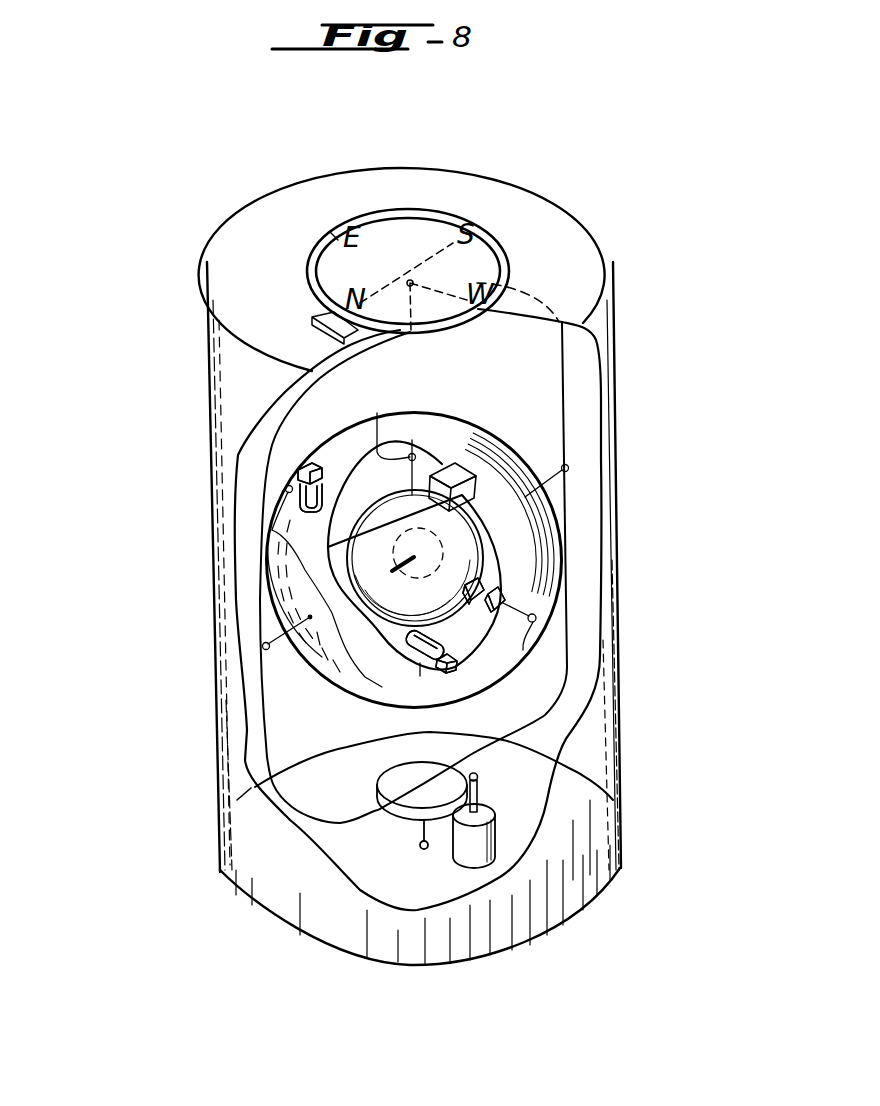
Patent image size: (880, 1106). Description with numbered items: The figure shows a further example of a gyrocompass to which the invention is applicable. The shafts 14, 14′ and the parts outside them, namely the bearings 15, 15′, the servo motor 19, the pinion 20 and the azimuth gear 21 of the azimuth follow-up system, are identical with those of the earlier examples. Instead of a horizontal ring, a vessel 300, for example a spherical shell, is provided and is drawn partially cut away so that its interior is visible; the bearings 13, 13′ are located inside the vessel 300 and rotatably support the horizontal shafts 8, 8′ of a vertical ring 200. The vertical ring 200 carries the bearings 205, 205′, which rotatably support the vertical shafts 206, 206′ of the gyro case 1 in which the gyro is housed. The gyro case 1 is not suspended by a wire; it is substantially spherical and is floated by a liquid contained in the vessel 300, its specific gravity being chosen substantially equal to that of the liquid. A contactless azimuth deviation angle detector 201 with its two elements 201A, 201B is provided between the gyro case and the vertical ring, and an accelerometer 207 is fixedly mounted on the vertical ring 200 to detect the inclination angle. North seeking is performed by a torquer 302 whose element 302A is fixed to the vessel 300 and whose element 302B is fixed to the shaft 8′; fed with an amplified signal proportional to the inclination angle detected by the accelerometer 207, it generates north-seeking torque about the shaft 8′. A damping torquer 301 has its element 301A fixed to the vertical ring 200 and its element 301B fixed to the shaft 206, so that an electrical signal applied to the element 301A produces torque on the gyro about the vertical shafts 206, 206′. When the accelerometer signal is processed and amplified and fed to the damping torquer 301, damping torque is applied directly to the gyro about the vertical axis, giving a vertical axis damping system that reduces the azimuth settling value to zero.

The gyro case 1 is at (375, 507).
The horizontal shaft 8 is at (557, 613).
The horizontal shaft 8′ is at (302, 534).
The bearing 13 is at (536, 619).
The bearing 13′ is at (285, 489).
The shaft 14 is at (300, 642).
The shaft 14′ is at (530, 492).
The bearing 15 is at (264, 648).
The bearing 15′ is at (568, 466).
The servo motor 19 is at (512, 824).
The pinion 20 is at (478, 781).
The azimuth gear 21 is at (378, 795).
The vertical ring 200 is at (450, 466).
The contactless azimuth deviation angle detector 201 is at (737, 530).
The element of azimuth deviation angle detector 201A is at (483, 583).
The element of azimuth deviation angle detector 201B is at (503, 600).
The bearing 205 is at (420, 676).
The bearing 205′ is at (413, 453).
The vertical shaft 206 is at (408, 662).
The vertical shaft 206′ is at (377, 413).
The accelerometer 207 is at (462, 468).
The vessel 300 is at (558, 588).
The damping torquer 301 is at (797, 697).
The element of damping torquer 301A is at (458, 667).
The element of damping torquer 301B is at (445, 655).
The torquer 302 is at (62, 497).
The element of torquer 302A is at (298, 476).
The element of torquer 302B is at (302, 502).